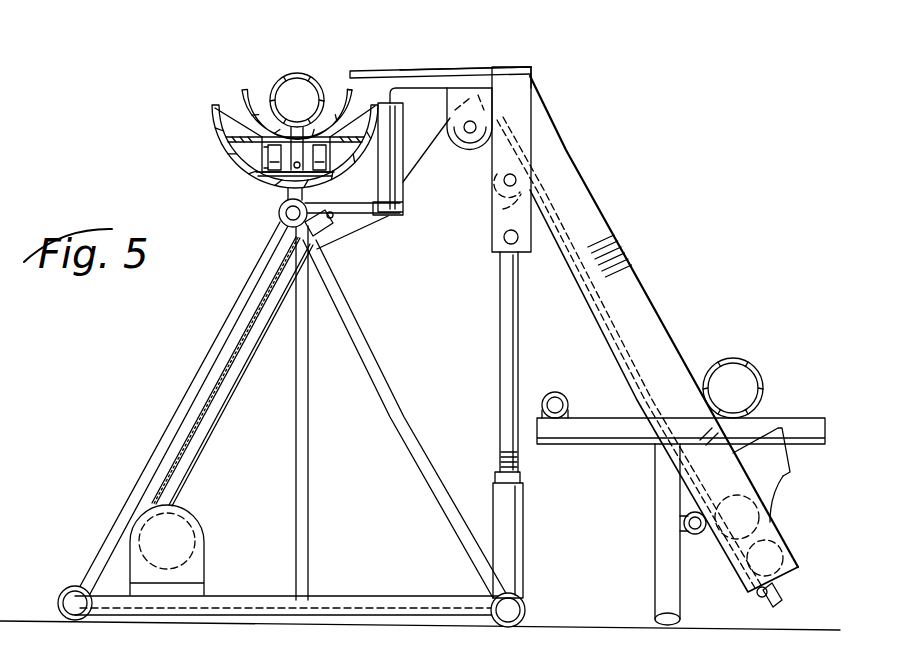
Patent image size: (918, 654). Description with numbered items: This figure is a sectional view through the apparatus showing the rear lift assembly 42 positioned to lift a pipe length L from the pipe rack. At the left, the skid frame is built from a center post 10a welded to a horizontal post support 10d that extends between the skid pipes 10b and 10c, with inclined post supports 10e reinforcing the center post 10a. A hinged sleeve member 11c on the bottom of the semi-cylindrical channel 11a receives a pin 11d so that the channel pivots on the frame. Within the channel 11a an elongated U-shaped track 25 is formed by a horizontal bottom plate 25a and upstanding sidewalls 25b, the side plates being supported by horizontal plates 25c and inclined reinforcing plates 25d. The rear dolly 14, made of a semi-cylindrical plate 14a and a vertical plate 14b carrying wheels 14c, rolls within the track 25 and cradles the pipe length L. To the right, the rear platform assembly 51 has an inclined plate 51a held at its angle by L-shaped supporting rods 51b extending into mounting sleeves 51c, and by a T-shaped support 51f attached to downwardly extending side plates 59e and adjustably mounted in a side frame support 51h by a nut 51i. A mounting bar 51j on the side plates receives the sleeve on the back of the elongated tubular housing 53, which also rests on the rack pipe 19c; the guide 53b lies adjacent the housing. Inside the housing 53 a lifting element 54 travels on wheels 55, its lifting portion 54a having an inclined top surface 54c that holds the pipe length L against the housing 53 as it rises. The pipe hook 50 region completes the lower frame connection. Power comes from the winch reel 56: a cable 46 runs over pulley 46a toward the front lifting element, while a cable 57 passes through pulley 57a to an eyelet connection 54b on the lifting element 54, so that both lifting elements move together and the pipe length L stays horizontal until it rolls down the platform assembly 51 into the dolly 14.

The center posts 10a is at (309, 475).
The skid pipe 10b is at (62, 592).
The skid pipe 10c is at (526, 611).
The horizontal post support 10d is at (340, 596).
The inclined post supports 10e is at (386, 376).
The semi-cylindrical elongated pipe support or channel 11a is at (262, 141).
The hinged sleeve member 11c is at (279, 213).
The pin 11d is at (305, 226).
The rear dolly 14 is at (243, 88).
The semi-cylindrical plate 14a is at (352, 88).
The vertical plate 14b is at (297, 143).
The wheels 14c is at (270, 160).
The pipe 19c is at (697, 535).
The elongated U-shaped track 25 is at (228, 100).
The horizontal elongated plate 25a is at (300, 174).
The upstanding sidewalls 25b is at (266, 163).
The horizontal plates 25c is at (262, 149).
The inclined reinforcing plates 25d is at (262, 136).
The rear lift assembly 42 is at (542, 88).
The cable 46 is at (235, 365).
The pulley 46a is at (350, 238).
The frame bracket 50 is at (357, 274).
The rear platform assembly 51 is at (452, 66).
The inclined plate 51a is at (480, 68).
The L-shaped supporting rods 51b is at (418, 84).
The mounting sleeves 51c is at (398, 217).
The T-shaped support 51f is at (503, 318).
The side frame support 51h is at (508, 514).
The nut 51i is at (492, 472).
The mounting bar 51j is at (504, 181).
The elongated tubular housing 53 is at (607, 219).
The cable guide 53b is at (503, 209).
The lifting element 54 is at (783, 478).
The lifting portion 54a is at (790, 442).
The eyelet connection 54b is at (778, 606).
The inclined top surface 54c is at (772, 419).
The wheels 55 is at (783, 560).
The winch reel 56 is at (190, 528).
The cable 57 is at (238, 406).
The pulley 57a is at (462, 146).
The side plates 59e is at (522, 113).
The pipe length L is at (297, 72).